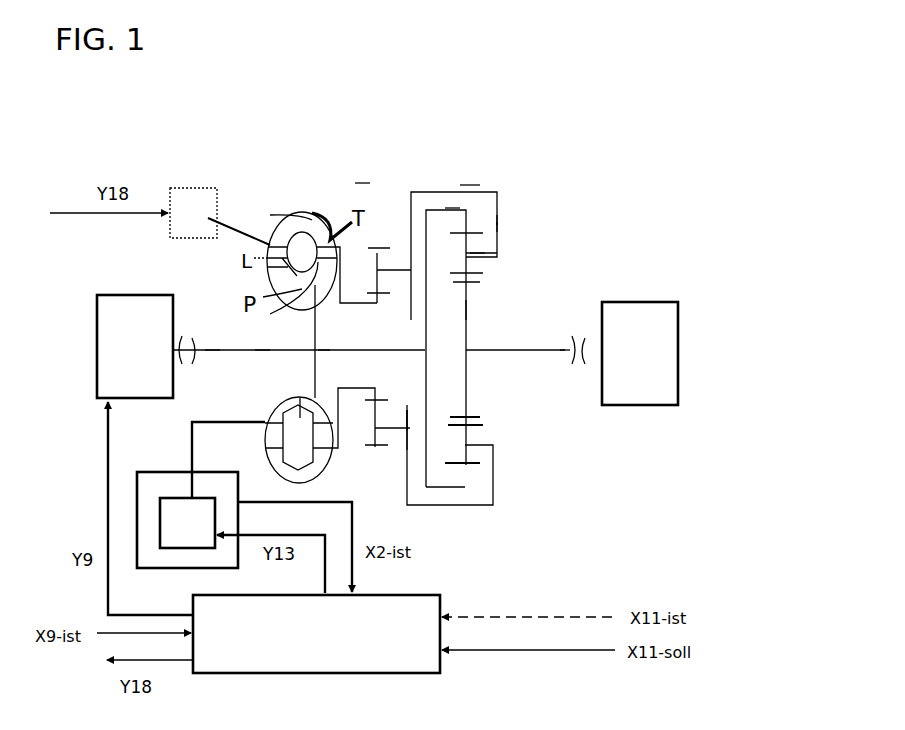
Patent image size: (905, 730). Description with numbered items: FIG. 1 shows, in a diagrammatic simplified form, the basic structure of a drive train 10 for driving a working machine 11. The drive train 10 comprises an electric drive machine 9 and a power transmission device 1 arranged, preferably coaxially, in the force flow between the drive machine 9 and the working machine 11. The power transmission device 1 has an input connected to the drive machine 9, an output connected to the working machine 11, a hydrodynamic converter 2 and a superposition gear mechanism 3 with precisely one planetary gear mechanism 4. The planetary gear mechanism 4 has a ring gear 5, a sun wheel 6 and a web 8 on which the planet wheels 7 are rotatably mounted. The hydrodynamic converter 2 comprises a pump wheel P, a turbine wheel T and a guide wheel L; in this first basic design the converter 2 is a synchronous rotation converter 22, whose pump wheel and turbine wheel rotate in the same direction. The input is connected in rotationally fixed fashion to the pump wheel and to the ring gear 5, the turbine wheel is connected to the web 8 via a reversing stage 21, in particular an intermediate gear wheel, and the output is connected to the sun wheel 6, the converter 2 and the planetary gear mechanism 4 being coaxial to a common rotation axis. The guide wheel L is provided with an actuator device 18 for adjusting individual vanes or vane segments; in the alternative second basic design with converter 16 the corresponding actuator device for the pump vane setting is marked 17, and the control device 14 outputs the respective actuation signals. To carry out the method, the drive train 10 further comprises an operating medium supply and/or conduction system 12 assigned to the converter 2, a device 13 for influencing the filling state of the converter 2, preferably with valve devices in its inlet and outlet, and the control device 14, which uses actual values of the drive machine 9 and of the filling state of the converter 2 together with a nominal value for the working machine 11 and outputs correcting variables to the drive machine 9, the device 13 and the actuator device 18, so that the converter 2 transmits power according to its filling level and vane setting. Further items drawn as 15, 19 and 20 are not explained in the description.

The power transmission device 1 is at (363, 183).
The hydrodynamic converter 2 is at (453, 208).
The superposition gear mechanism 3 is at (470, 184).
The planetary gear mechanism 4 is at (507, 220).
The ring gear 5 is at (497, 227).
The sun wheel 6 is at (477, 253).
The planet wheels 7 is at (467, 313).
The web 8 is at (565, 350).
The electric drive machine 9 is at (135, 346).
The drive train 10 is at (432, 133).
The working machine 11 is at (640, 353).
The operating medium supply and/or conduction system 12 is at (190, 468).
The device for influencing the filling state of the converter 13 is at (187, 520).
The control device 14 is at (316, 634).
The shaft section 15 is at (212, 345).
The converter 16 is at (262, 343).
The actuator device 17 is at (323, 343).
The actuator device 18 is at (220, 216).
The housing 19 is at (407, 420).
The planetary gear set 20 is at (302, 305).
The reversing stage 21 is at (387, 248).
The synchronous rotation converter 22 is at (306, 199).